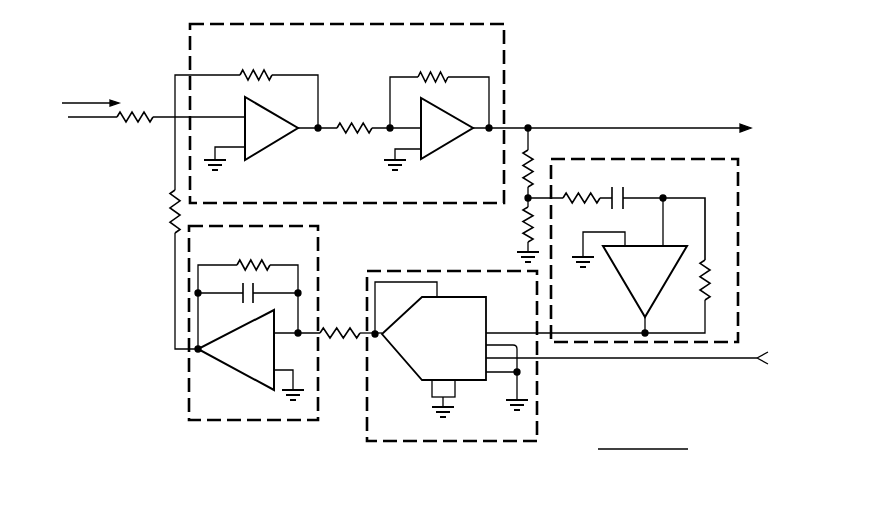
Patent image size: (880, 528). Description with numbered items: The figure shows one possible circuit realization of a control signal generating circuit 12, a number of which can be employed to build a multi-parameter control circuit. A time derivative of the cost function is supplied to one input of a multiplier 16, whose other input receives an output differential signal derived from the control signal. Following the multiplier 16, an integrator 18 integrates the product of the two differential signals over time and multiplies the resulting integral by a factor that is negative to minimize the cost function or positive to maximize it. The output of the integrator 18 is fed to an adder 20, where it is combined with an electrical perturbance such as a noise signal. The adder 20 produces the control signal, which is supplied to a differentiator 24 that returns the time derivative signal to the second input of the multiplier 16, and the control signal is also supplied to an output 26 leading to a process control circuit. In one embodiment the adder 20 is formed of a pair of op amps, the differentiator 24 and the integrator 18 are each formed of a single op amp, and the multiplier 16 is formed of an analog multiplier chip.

The control signal generating circuit 12 is at (438, 258).
The multiplier 16 is at (408, 441).
The integrator 18 is at (227, 420).
The adder circuit 20 is at (417, 24).
The differentiator circuit 24 is at (738, 220).
The output 26 is at (716, 103).